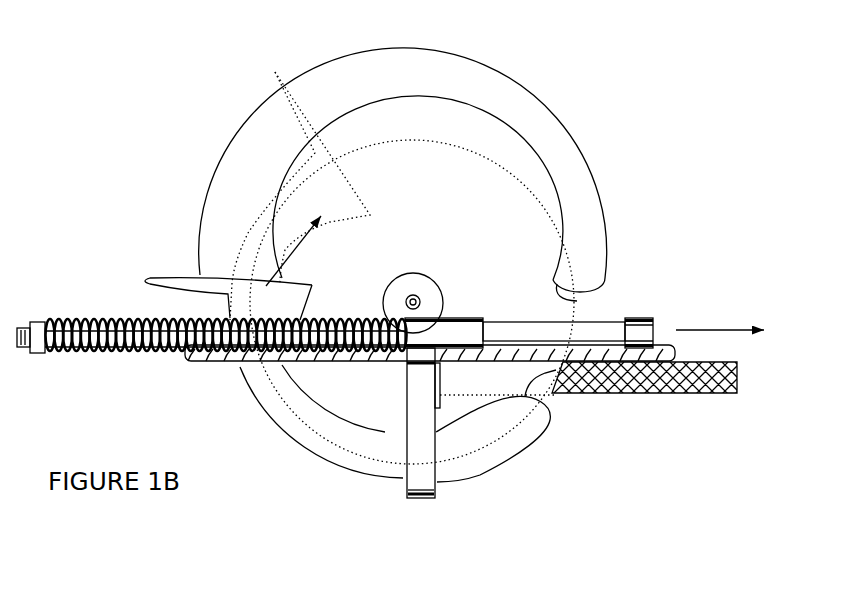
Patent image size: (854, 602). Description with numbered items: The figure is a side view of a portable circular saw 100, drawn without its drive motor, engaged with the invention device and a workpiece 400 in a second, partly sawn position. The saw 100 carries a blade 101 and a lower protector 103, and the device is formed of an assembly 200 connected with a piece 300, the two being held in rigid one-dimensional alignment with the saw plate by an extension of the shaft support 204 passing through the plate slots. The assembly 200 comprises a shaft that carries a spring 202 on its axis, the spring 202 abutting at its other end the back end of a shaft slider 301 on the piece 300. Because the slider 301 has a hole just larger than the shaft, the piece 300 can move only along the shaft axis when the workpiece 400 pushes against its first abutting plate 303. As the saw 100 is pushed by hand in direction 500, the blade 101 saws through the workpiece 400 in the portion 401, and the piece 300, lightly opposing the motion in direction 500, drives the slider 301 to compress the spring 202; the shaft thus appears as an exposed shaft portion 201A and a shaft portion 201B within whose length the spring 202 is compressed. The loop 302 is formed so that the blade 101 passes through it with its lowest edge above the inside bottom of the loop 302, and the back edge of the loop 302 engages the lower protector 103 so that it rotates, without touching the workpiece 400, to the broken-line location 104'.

The portable circular saw 100 is at (584, 128).
The rotated protector location 104' is at (317, 165).
The saw blade 101 is at (474, 456).
The lower protector 103 is at (520, 441).
The sawn portion of workpiece 401 is at (514, 384).
The assembly 200 is at (62, 317).
The shaft portion 201B is at (103, 353).
The spring 202 is at (147, 355).
The shaft slider 301 is at (456, 322).
The shaft portion 201A is at (556, 334).
The shaft support 204 is at (640, 316).
The direction 500 is at (720, 317).
The workpiece 400 is at (665, 396).
The piece 300 is at (434, 502).
The loop 302 is at (418, 474).
The first abutting plate 303 is at (437, 403).